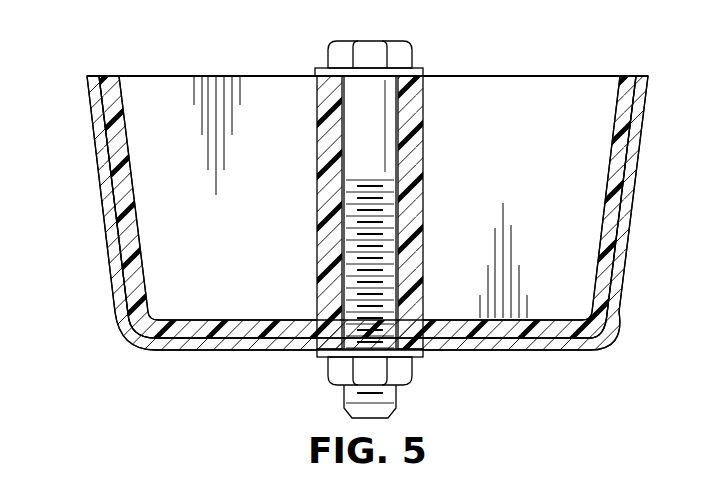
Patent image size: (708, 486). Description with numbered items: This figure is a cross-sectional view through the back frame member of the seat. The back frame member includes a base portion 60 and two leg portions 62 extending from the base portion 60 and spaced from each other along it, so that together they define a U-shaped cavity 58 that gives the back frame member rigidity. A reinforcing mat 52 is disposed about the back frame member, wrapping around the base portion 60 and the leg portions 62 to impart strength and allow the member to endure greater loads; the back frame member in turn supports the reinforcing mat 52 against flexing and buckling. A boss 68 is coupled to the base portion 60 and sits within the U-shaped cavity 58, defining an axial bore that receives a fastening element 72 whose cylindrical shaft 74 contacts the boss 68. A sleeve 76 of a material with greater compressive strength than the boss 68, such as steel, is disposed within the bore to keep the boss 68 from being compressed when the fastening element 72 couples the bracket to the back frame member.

The reinforcing mat 52 is at (356, 240).
The U-shaped cavity 58 is at (556, 94).
The base portion 60 is at (207, 331).
The leg portions 62 is at (122, 182).
The boss 68 is at (330, 212).
The fastening element 72 is at (405, 52).
The cylindrical shaft 74 is at (360, 247).
The sleeve 76 is at (402, 307).